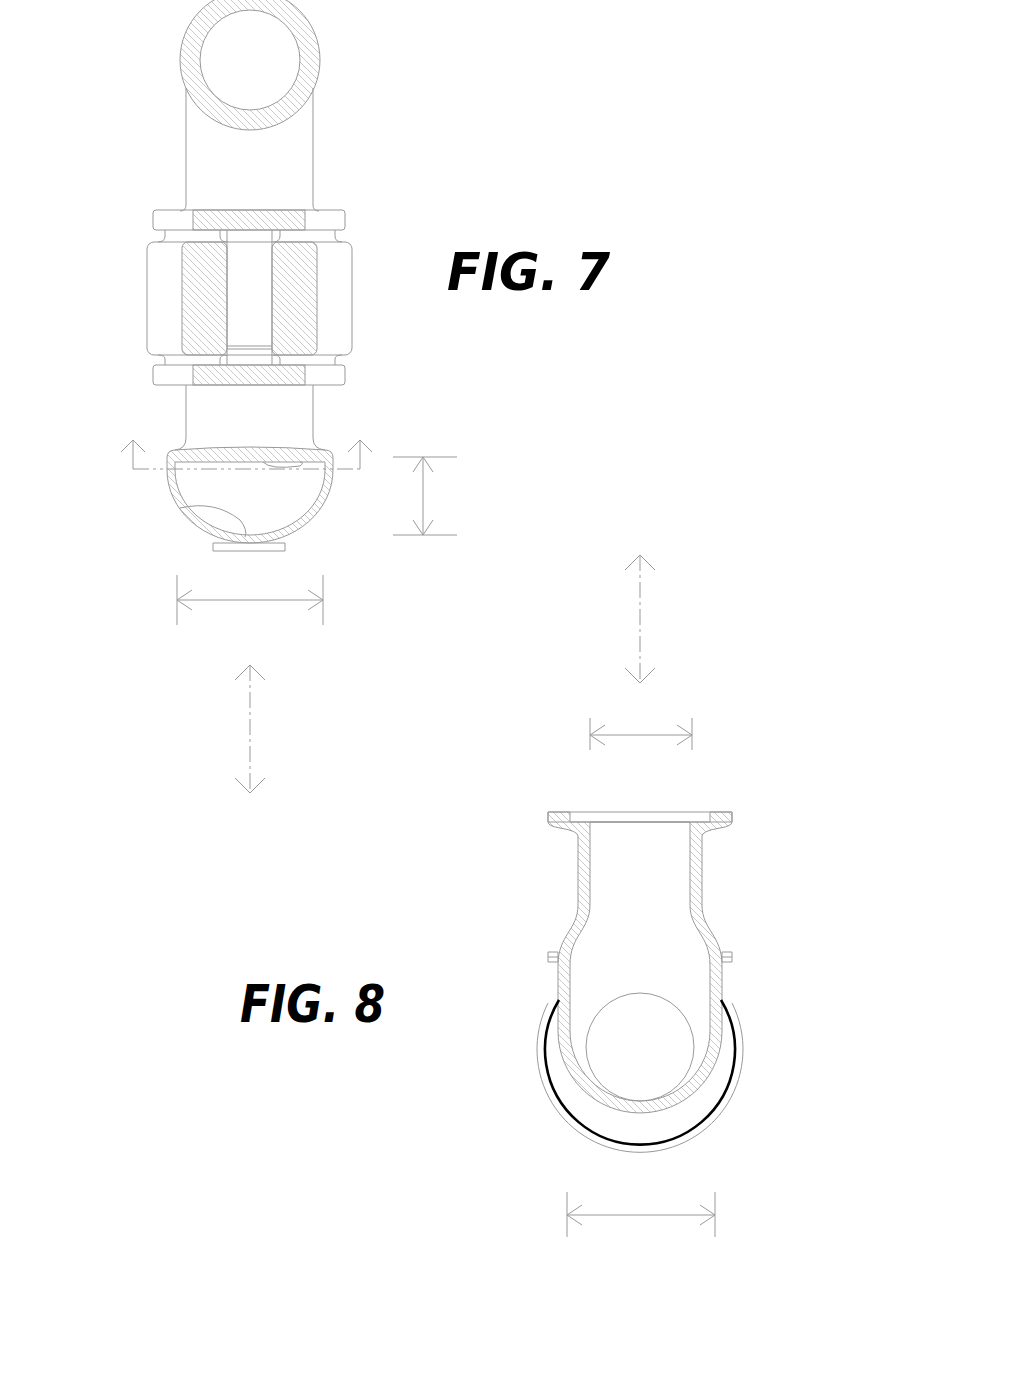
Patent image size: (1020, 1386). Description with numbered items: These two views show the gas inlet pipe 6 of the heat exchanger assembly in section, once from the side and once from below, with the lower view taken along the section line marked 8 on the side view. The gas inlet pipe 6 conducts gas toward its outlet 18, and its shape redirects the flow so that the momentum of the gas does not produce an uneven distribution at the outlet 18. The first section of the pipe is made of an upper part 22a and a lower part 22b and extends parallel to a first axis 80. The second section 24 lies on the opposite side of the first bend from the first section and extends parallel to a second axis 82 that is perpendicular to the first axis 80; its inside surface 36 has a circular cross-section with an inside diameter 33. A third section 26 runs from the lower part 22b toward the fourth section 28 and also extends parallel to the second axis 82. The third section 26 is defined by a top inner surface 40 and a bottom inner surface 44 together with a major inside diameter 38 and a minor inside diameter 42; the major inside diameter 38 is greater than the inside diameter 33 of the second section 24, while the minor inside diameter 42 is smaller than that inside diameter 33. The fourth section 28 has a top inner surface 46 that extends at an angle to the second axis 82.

In FIG. 7, the gas inlet pipe 6 is at (488, 146).
In FIG. 8, the gas inlet pipe 6 is at (778, 695).
In FIG. 7, the section line 8- 8 is at (246, 453).
In FIG. 8, the outlet 18 is at (727, 812).
In FIG. 7, the upper part of first section 22a is at (200, 166).
In FIG. 7, the lower part of first section 22b is at (207, 412).
In FIG. 8, the second section 24 is at (672, 864).
In FIG. 7, the third section 26 is at (167, 487).
In FIG. 8, the third section 26 is at (677, 940).
In FIG. 8, the fourth section 28 is at (702, 1040).
In FIG. 8, the inside diameter of second section 33 is at (641, 724).
In FIG. 8, the inside surface of second section 36 is at (570, 842).
In FIG. 7, the major inside diameter 38 is at (250, 606).
In FIG. 8, the major inside diameter 38 is at (641, 1224).
In FIG. 7, the top inner surface of third section 40 is at (303, 452).
In FIG. 8, the top inner surface of third section 40 is at (593, 985).
In FIG. 7, the minor inside diameter 42 is at (428, 496).
In FIG. 7, the bottom inner surface of third section 44 is at (205, 533).
In FIG. 8, the top inner surface of fourth section 46 is at (618, 943).
In FIG. 7, the first axis 80 is at (236, 729).
In FIG. 8, the second axis 82 is at (650, 619).